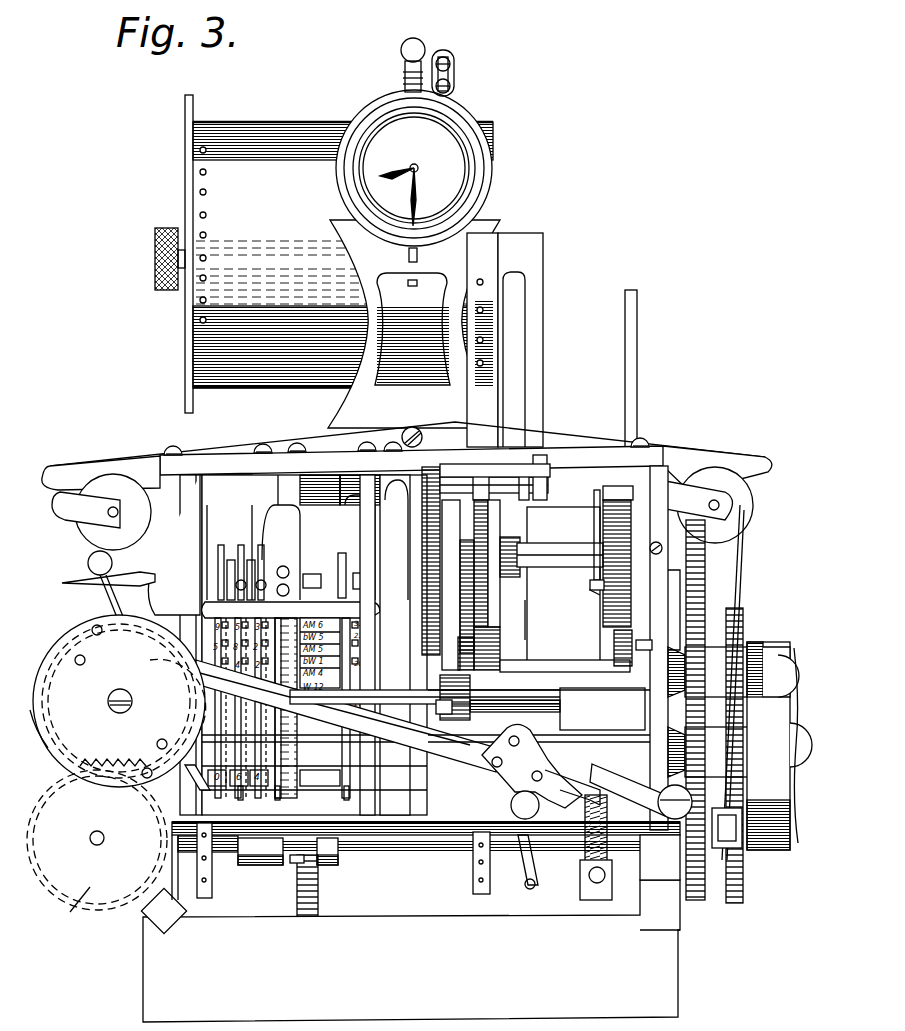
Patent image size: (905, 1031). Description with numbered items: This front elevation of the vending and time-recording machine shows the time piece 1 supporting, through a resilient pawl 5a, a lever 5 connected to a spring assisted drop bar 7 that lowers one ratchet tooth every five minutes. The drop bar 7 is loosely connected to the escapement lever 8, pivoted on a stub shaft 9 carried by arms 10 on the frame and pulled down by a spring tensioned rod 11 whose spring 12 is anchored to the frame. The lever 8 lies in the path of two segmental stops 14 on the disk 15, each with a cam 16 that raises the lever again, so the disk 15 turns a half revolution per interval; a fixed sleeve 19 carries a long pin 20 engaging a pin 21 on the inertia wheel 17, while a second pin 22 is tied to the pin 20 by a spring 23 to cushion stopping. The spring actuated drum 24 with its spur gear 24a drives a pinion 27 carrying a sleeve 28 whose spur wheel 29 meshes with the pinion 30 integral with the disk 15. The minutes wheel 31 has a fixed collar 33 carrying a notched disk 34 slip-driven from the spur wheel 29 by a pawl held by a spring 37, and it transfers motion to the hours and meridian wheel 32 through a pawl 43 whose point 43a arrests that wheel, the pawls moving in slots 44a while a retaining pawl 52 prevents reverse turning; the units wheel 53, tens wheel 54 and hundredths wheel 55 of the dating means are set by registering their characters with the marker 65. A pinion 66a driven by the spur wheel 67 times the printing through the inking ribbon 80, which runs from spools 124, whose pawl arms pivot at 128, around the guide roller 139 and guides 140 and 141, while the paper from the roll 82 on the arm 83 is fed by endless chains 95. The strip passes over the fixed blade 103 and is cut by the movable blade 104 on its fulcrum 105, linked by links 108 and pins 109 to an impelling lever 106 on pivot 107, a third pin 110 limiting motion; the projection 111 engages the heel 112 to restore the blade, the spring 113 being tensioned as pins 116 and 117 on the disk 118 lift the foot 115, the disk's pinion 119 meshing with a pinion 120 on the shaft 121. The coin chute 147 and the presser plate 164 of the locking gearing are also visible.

The time piece 1 is at (460, 122).
The lever 5 is at (456, 82).
The resilient pawl 5a is at (450, 60).
The spring assisted drop bar 7 is at (463, 409).
The escapement lever 8 is at (478, 505).
The stub shaft 9 is at (488, 480).
The arms 10 is at (558, 462).
The spring tensioned rod 11 is at (540, 465).
The spring 12 is at (438, 522).
The segmental stops 14 is at (493, 560).
The disk 15 is at (494, 540).
The cam 16 is at (505, 572).
The inertia wheel 17 is at (606, 598).
The fixed sleeve 19 is at (546, 606).
The pin 20 is at (594, 520).
The pin 21 is at (599, 487).
The second pin 22 is at (595, 592).
The spring 23 is at (565, 540).
The spring actuated drum 24 is at (540, 612).
The spur gear 24a is at (614, 645).
The pinion 27 is at (608, 697).
The sleeve 28 is at (540, 670).
The spur wheel 29 is at (458, 622).
The pinion 30 is at (458, 578).
The minutes wheel 31 is at (345, 598).
The hours and meridian wheel 32 is at (318, 566).
The fixed collar 33 is at (422, 715).
The notched disk 34 is at (455, 674).
The spring 37 is at (442, 701).
The pawl 43 is at (210, 590).
The point 43a is at (232, 475).
The slots 44a is at (242, 578).
The retaining pawl 52 is at (248, 790).
The units wheel 53 is at (266, 560).
The tens wheel 54 is at (238, 590).
The hundredths wheel 55 is at (205, 583).
The marker 65 is at (318, 600).
The pinion 66a is at (700, 850).
The spur wheel 67 is at (705, 600).
The inking ribbon 80 is at (738, 590).
The roll 82 is at (185, 330).
The arm 83 is at (538, 352).
The endless chains 95 is at (473, 882).
The fixed blade 103 is at (410, 810).
The movable blade 104 is at (348, 716).
The fulcrum 105 is at (512, 806).
The impelling lever 106 is at (641, 791).
The pivot 107 is at (676, 820).
The links 108 is at (532, 766).
The pins 109 is at (510, 741).
The third pin 110 is at (530, 778).
The projection 111 is at (572, 785).
The heel 112 is at (567, 835).
The spring 113 is at (594, 860).
The foot 115 is at (130, 710).
The pin 116 is at (60, 712).
The pin 117 is at (99, 636).
The disk 118 is at (52, 745).
The pinion 119 is at (105, 762).
The pinion 120 is at (78, 902).
The shaft 121 is at (103, 840).
The spools 124 is at (85, 522).
The pivot 128 is at (410, 428).
The guide roller 139 is at (527, 890).
The guide 140 is at (492, 764).
The guide 141 is at (206, 782).
The coin chute 147 is at (638, 345).
The presser plate 164 is at (800, 650).